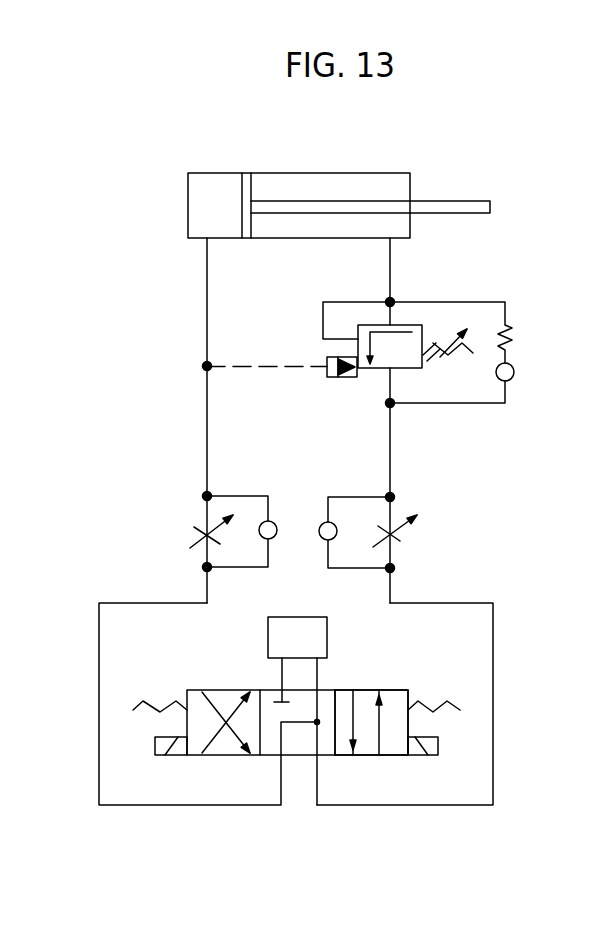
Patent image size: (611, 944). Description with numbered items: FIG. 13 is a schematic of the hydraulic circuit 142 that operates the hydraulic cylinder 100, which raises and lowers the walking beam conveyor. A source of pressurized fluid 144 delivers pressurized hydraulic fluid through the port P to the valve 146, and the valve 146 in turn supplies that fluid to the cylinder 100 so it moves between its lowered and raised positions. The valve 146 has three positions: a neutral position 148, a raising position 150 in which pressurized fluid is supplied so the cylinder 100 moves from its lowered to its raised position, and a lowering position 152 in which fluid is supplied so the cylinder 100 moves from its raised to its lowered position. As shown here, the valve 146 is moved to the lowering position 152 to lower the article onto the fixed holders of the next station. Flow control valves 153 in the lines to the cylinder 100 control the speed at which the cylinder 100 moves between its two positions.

The hydraulic cylinder 100 is at (266, 173).
The hydraulic circuit 142 is at (478, 567).
The source of pressurized fluid 144 is at (268, 638).
The valve 146 is at (379, 755).
The neutral position 148 is at (458, 689).
The raising position 150 is at (353, 755).
The lowering position 152 is at (230, 755).
The flow control valves 153 is at (190, 522).